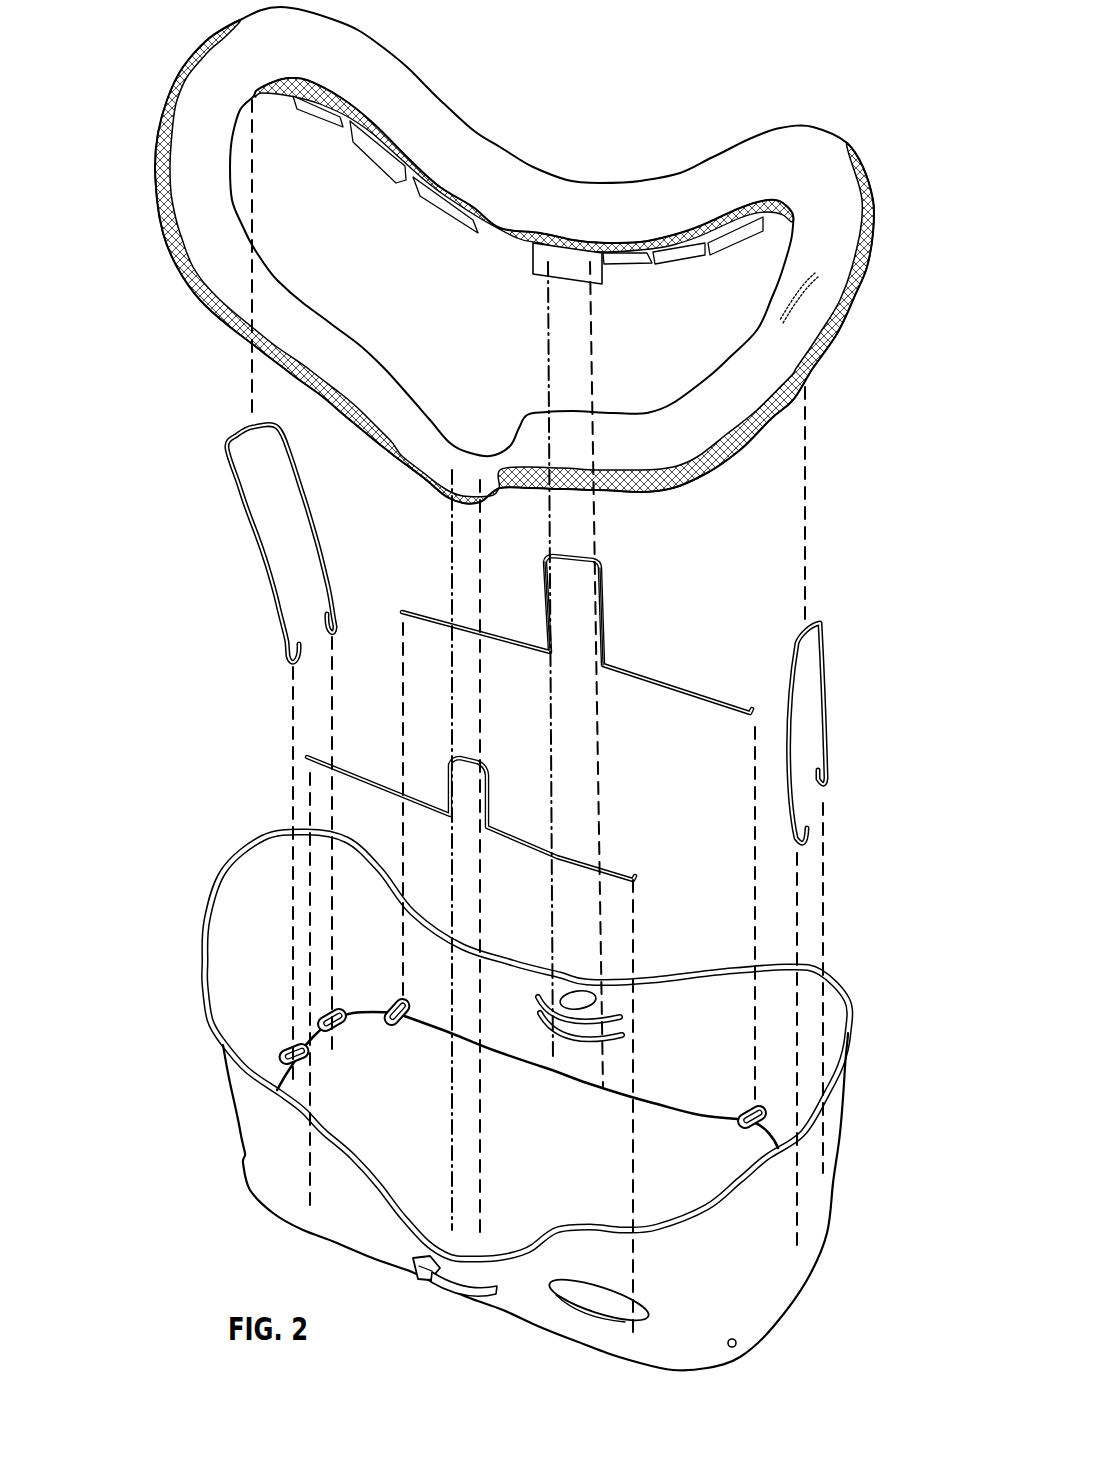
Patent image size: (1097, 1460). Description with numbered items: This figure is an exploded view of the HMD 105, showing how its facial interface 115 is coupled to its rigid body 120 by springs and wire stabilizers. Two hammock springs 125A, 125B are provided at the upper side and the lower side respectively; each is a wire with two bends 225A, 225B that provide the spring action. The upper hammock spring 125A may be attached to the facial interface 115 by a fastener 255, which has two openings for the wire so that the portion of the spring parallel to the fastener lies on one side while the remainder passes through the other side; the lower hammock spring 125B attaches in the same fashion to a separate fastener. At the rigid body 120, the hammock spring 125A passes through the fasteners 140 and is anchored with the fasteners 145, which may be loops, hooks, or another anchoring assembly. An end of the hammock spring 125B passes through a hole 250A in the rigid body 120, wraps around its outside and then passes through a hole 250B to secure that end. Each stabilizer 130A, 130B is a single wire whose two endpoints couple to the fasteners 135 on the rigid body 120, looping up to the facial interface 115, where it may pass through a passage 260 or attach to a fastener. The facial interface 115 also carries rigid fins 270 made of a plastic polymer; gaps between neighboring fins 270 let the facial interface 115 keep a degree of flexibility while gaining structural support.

The HMD 105 is at (905, 72).
The facial interface 115 is at (163, 88).
The rigid body 120 is at (227, 1118).
The hammock spring 125A is at (655, 668).
The hammock spring 125B is at (620, 872).
The stabilizer 130A is at (250, 537).
The stabilizer 130B is at (827, 715).
The fasteners 135 is at (317, 1067).
The fasteners 140 is at (620, 1023).
The fasteners 145 is at (738, 1130).
The bend 225A is at (545, 662).
The bend 225B is at (598, 670).
The hole 250A is at (630, 1343).
The hole 250B is at (746, 1343).
The fastener 255 is at (543, 259).
The passage 260 is at (800, 303).
The fins 270 is at (378, 160).